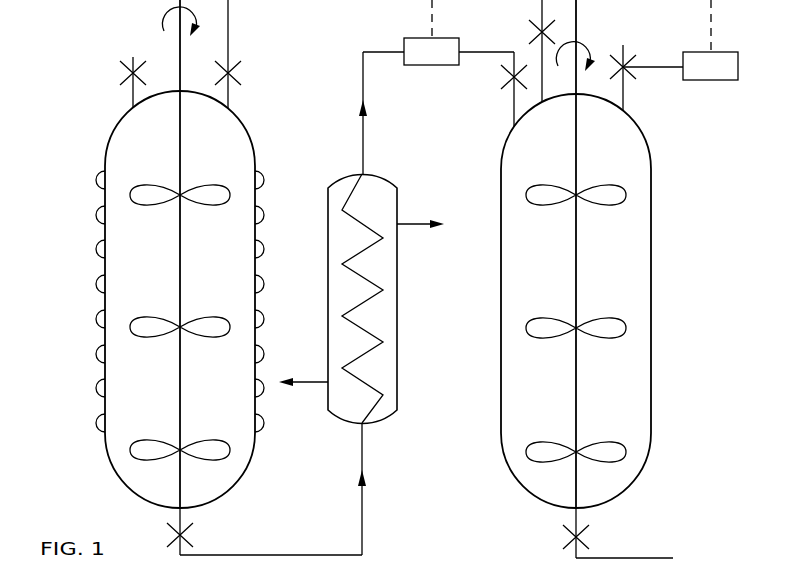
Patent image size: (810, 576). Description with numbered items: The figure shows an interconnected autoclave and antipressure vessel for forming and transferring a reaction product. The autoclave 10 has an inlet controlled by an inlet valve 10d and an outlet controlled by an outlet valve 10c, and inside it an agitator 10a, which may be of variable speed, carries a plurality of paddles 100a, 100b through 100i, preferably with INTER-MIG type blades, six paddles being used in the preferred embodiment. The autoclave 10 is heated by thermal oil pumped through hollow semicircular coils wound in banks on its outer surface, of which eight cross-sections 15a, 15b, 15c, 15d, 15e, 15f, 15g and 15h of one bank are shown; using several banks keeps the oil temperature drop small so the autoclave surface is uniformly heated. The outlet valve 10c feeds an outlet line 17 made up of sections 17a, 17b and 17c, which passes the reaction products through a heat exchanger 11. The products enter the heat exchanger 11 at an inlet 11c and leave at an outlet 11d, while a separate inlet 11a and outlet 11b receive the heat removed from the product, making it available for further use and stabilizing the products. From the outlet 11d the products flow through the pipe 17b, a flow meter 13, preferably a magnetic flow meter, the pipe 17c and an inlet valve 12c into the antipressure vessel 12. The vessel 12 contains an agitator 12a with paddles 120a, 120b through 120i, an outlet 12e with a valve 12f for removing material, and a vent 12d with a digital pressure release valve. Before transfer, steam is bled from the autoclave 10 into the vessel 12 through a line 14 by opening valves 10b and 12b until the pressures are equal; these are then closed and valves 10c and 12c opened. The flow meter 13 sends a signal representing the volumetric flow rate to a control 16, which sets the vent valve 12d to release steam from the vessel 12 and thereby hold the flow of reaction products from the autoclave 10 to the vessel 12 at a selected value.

The autoclave 10 is at (252, 140).
The agitator 10a is at (178, 36).
The valve 10b is at (240, 73).
The outlet valve 10c is at (170, 539).
The inlet valve 10d is at (120, 73).
The paddle 100a is at (175, 190).
The paddle 100b is at (177, 324).
The paddle 100i is at (175, 447).
The heating coil cross-section 15a is at (96, 181).
The heating coil cross-section 15b is at (96, 216).
The heating coil cross-section 15c is at (96, 250).
The heating coil cross-section 15d is at (96, 285).
The heating coil cross-section 15e is at (96, 320).
The heating coil cross-section 15f is at (96, 355).
The heating coil cross-section 15g is at (96, 389).
The heating coil cross-section 15h is at (96, 424).
The heat exchanger 11 is at (398, 322).
The inlet 11a is at (400, 226).
The outlet 11b is at (326, 383).
The inlet 11c is at (360, 461).
The outlet 11d is at (363, 140).
The flow meter 13 is at (430, 66).
The line 14 is at (282, 0).
The control 16 is at (715, 81).
The outlet line 17 is at (278, 572).
The outlet line section 17a is at (246, 555).
The pipe 17b is at (382, 51).
The pipe 17c is at (477, 51).
The antipressure vessel 12 is at (650, 147).
The agitator 12a is at (578, 24).
The valve 12b is at (540, 33).
The inlet valve 12c is at (509, 88).
The vent 12d is at (630, 58).
The outlet 12e is at (640, 558).
The valve 12f is at (567, 538).
The paddle 120a is at (570, 192).
The paddle 120b is at (570, 325).
The paddle 120i is at (572, 449).